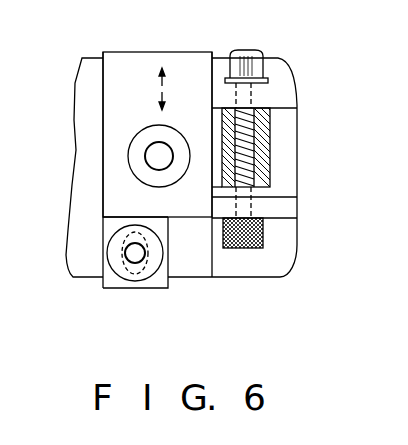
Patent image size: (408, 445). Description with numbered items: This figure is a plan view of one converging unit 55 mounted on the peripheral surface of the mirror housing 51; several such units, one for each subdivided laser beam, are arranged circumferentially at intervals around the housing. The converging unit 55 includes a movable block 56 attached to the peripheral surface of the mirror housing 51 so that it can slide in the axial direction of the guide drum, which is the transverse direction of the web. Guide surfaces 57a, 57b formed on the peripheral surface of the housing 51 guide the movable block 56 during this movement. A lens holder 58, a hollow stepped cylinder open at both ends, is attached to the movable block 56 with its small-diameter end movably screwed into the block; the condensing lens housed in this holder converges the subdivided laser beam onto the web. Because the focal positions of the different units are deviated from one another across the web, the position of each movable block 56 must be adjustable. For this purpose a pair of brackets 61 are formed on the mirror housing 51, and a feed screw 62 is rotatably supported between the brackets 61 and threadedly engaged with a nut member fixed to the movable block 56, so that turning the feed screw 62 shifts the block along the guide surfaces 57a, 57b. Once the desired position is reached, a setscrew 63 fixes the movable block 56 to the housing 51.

The mirror housing 51 is at (88, 110).
The converging unit 55 is at (94, 140).
The movable block 56 is at (191, 68).
The guide surface 57a is at (104, 180).
The guide surface 57b is at (210, 262).
The lens holder 58 is at (150, 131).
The brackets 61 is at (281, 97).
The feed screw 62 is at (268, 154).
The setscrew 63 is at (137, 252).